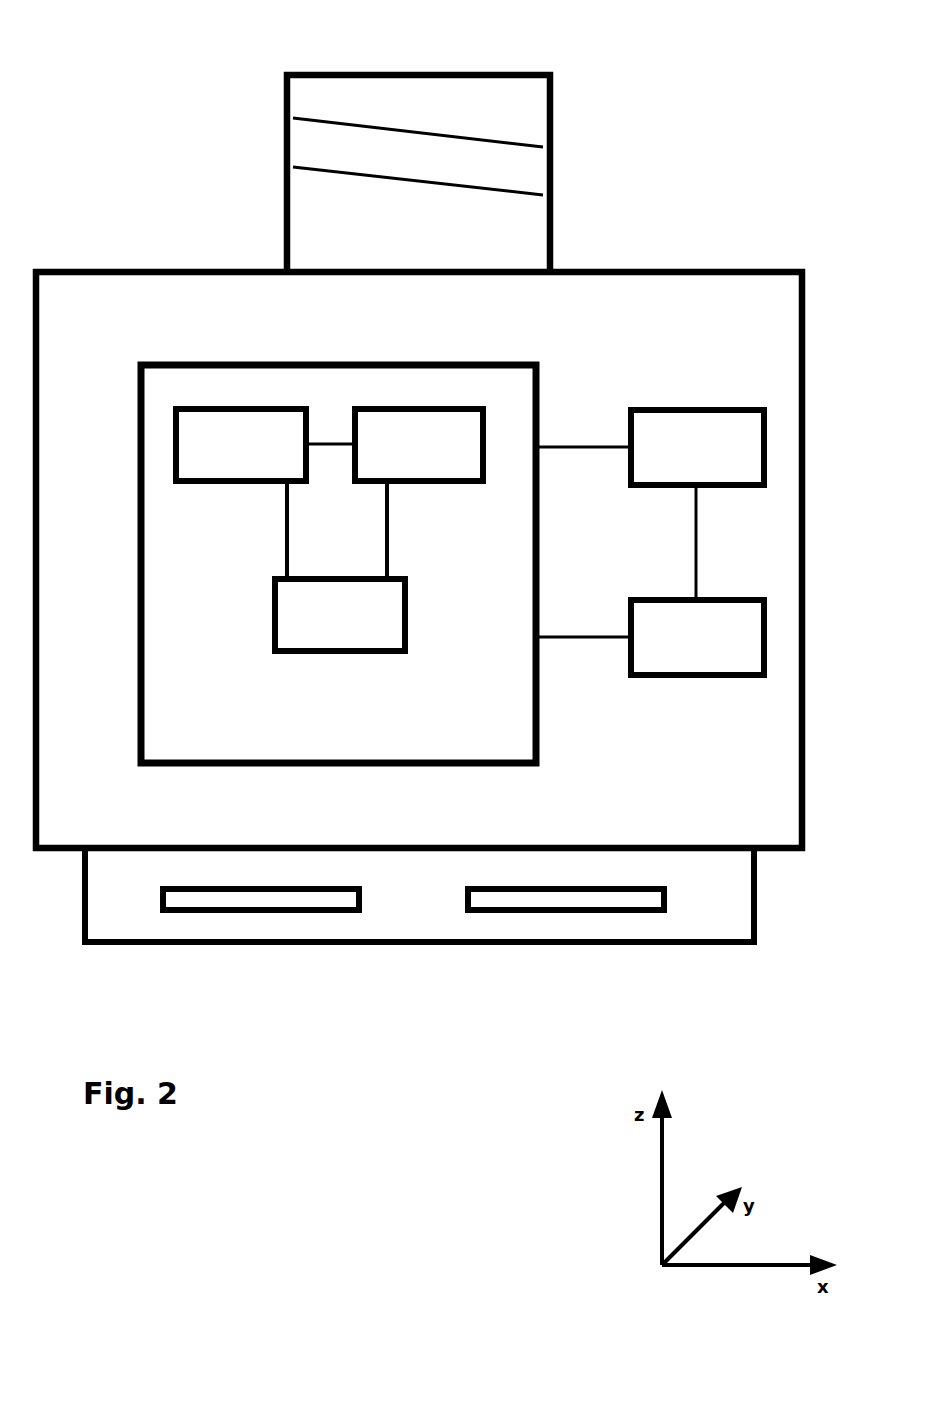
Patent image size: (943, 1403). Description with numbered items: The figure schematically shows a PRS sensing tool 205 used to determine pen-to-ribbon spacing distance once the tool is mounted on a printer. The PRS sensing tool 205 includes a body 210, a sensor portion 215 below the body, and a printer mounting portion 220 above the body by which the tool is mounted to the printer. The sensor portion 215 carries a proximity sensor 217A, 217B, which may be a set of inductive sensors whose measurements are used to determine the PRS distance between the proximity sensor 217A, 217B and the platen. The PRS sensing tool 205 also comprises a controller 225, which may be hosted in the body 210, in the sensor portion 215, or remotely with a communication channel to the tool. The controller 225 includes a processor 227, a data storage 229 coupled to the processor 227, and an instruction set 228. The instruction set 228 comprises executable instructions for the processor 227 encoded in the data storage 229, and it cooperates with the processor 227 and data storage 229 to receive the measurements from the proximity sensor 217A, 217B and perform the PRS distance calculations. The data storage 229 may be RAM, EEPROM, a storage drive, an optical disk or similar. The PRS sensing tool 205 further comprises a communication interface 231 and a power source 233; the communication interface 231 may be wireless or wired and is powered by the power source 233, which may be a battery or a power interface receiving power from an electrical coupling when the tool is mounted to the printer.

The PRS sensing tool 205 is at (124, 96).
The body 210 is at (697, 269).
The sensor portion 215 is at (752, 950).
The proximity sensor 217A is at (212, 913).
The proximity sensor 217B is at (517, 913).
The printer mounting portion 220 is at (553, 107).
The controller 225 is at (537, 373).
The processor 227 is at (270, 488).
The instruction set 228 is at (365, 658).
The data storage 229 is at (485, 488).
The communication interface 231 is at (677, 407).
The power source 233 is at (707, 598).